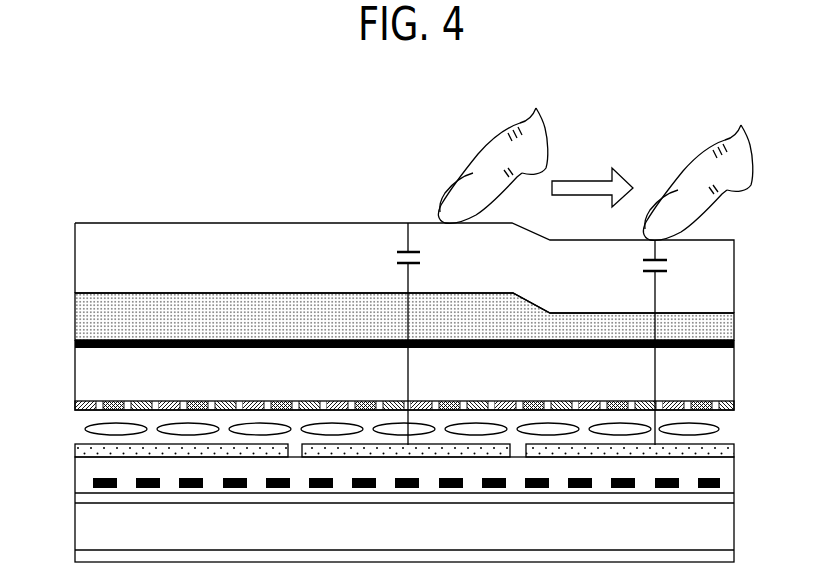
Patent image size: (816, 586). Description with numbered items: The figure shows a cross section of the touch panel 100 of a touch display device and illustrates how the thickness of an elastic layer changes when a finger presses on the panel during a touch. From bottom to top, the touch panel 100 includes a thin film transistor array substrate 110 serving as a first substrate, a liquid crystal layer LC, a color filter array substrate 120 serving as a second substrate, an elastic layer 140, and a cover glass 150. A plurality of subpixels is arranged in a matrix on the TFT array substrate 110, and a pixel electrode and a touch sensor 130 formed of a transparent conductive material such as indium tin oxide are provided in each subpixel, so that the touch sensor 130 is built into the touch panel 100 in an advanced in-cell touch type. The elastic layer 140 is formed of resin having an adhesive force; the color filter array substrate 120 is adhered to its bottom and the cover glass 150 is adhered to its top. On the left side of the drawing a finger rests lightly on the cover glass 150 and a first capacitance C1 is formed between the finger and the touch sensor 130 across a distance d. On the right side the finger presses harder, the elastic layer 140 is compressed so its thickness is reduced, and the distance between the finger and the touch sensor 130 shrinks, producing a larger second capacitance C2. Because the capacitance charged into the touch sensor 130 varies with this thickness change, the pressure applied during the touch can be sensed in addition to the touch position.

The touch panel 100 is at (427, 107).
The thin film transistor array substrate 110 is at (63, 447).
The color filter array substrate 120 is at (63, 342).
The touch sensor 130 is at (736, 450).
The elastic layer 140 is at (80, 318).
The cover glass 150 is at (85, 262).
The liquid crystal layer LC is at (720, 428).
The first capacitance C1 is at (424, 334).
The second capacitance C2 is at (668, 342).